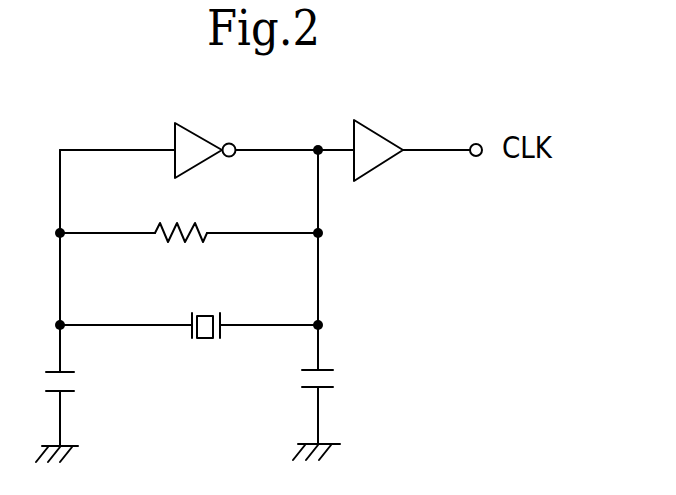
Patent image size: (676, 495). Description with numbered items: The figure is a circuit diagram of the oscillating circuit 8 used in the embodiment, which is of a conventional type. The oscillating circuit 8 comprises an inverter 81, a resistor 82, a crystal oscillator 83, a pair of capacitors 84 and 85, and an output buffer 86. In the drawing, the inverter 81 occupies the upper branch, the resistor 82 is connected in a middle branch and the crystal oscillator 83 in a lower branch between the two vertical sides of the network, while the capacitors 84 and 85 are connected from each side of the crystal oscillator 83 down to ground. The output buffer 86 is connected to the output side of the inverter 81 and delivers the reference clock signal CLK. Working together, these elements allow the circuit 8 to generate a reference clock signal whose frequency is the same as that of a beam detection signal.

The oscillating circuit 8 is at (377, 328).
The inverter 81 is at (193, 147).
The resistor 82 is at (205, 237).
The crystal oscillator 83 is at (208, 343).
The capacitor 84 is at (80, 391).
The capacitor 85 is at (333, 395).
The output buffer 86 is at (378, 142).